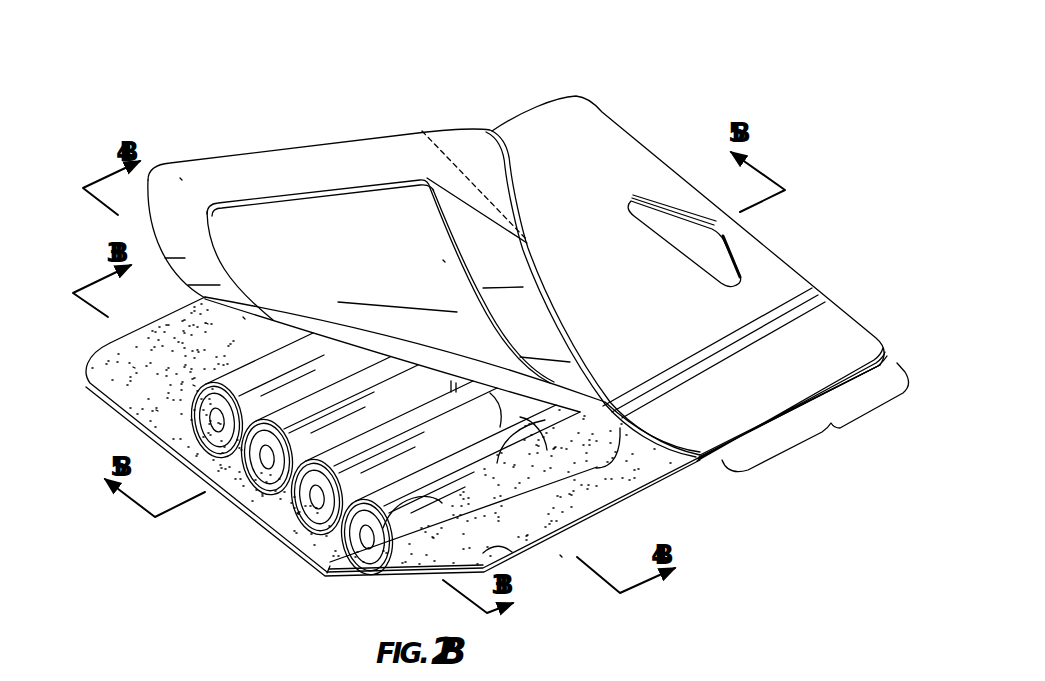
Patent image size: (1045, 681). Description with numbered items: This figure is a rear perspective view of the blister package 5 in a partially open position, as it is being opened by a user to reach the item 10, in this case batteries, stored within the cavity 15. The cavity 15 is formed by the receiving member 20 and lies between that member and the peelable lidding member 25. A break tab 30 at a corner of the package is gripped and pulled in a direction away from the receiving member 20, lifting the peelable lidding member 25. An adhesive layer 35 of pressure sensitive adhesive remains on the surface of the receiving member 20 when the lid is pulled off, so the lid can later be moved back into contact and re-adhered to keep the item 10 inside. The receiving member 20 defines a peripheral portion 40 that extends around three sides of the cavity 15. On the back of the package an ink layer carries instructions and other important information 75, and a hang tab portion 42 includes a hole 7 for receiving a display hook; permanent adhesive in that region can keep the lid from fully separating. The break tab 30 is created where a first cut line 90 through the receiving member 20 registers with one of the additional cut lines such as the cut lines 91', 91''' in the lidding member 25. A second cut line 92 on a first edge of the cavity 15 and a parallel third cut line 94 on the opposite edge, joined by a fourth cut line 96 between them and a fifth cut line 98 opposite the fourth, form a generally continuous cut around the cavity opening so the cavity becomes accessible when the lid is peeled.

The blister package 5 is at (129, 104).
The hole 7 is at (677, 210).
The item 10 is at (605, 492).
The cavity 15 is at (193, 383).
The receiving member 20 is at (514, 530).
The peelable lidding member 25 is at (180, 178).
The break tab 30 is at (472, 147).
The adhesive layer 35 is at (133, 365).
The peripheral portion 40 is at (206, 320).
The hang tab portion 42 is at (815, 417).
The instructions and other important information 75 is at (590, 200).
The first cut line 90 is at (425, 572).
The additional first cut line 91' is at (521, 589).
The additional first cut line 91''' is at (451, 151).
The second cut line 92 is at (330, 568).
The third cut line 94 is at (243, 317).
The fourth cut line 96 is at (232, 412).
The fifth cut line 98 is at (443, 260).